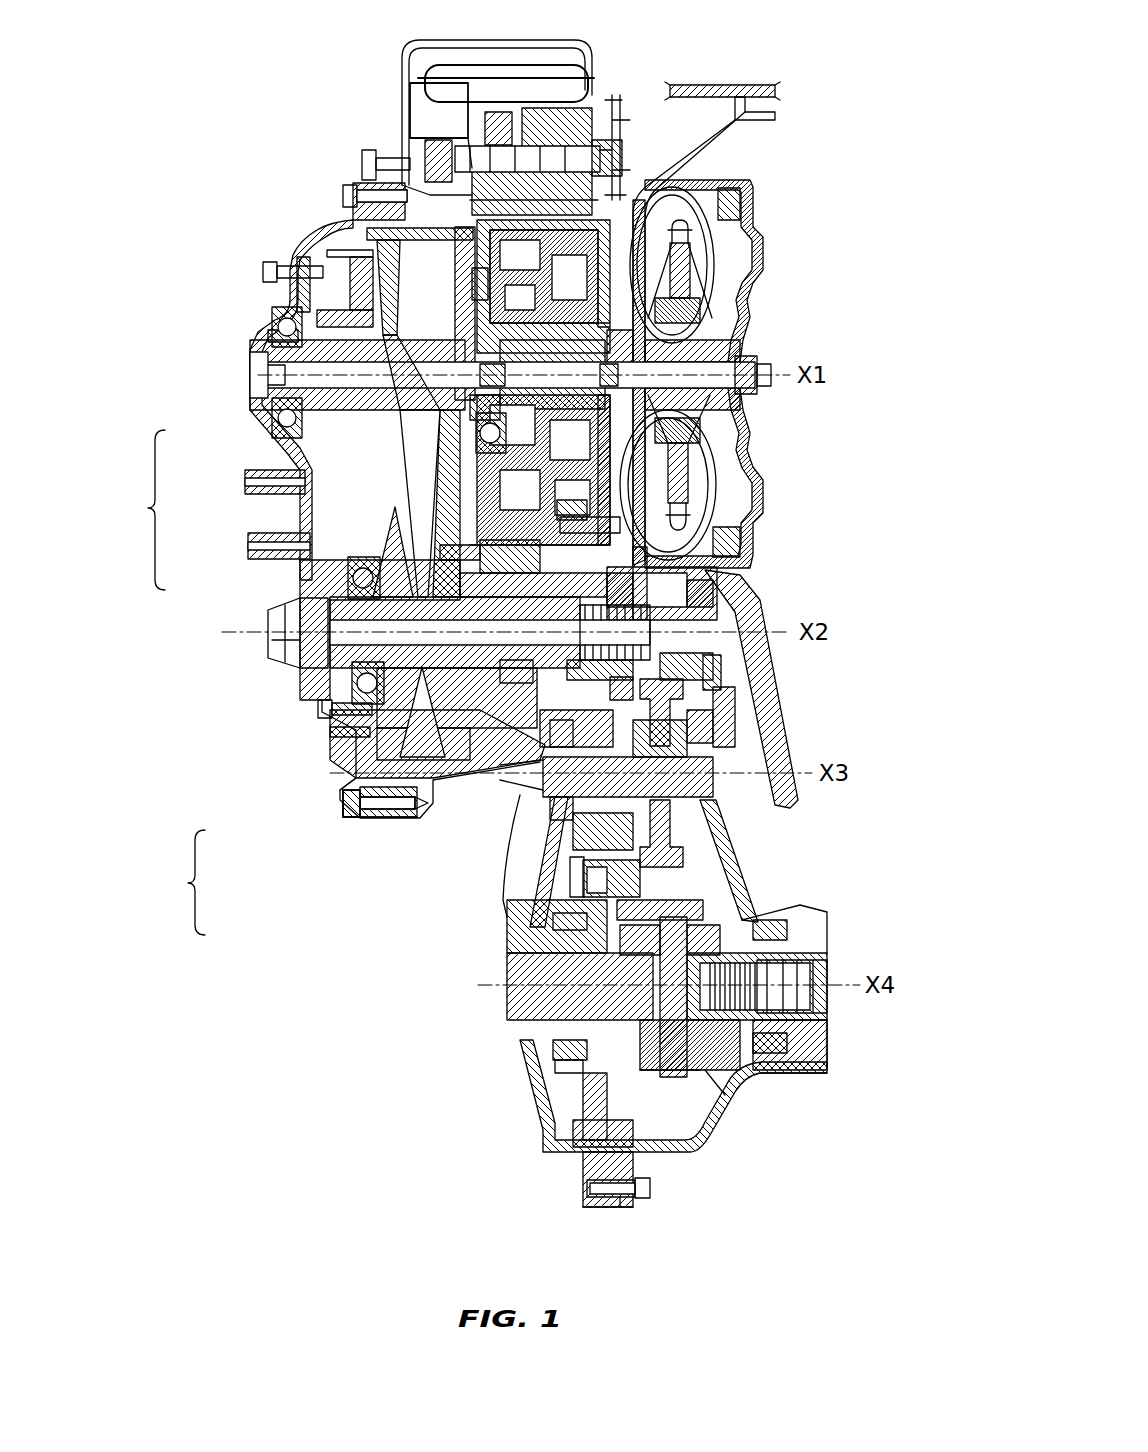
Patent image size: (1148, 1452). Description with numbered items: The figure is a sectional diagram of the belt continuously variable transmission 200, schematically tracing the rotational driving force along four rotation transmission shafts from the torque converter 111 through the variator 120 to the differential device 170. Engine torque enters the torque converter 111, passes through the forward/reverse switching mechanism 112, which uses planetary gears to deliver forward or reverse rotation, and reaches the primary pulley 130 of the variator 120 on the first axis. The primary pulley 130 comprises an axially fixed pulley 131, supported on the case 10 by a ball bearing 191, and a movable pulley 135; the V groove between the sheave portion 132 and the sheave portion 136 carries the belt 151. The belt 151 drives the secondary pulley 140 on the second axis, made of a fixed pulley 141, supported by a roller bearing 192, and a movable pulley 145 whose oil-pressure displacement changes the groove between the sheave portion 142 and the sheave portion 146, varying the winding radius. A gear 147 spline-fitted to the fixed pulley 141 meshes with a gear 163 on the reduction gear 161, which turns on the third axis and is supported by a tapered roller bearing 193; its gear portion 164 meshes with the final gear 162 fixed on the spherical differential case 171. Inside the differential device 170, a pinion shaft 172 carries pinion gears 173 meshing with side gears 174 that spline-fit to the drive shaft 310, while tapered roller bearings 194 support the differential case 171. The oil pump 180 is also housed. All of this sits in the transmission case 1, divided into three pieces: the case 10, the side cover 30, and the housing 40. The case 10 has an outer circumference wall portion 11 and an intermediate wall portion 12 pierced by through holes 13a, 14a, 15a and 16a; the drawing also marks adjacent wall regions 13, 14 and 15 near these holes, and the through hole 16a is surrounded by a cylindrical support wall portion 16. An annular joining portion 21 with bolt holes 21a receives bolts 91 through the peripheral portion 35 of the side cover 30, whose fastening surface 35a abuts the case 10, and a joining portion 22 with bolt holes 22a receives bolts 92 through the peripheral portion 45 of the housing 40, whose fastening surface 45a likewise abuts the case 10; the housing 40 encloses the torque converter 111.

The transmission case 1 is at (181, 882).
The case 10 is at (505, 915).
The outer circumference wall portion 11 is at (438, 792).
The intermediate wall portion 12 is at (462, 522).
The second bevel gear 13 is at (462, 446).
The through hole 13a is at (490, 430).
The counter shaft 14 is at (490, 640).
The through hole 14a is at (628, 758).
The output gear 15 is at (552, 842).
The through hole 15a is at (548, 812).
The cylindrical support wall portion 16 is at (583, 1100).
The through hole 16a is at (560, 1062).
The joining portion 21 is at (395, 818).
The bolt holes 21a is at (375, 156).
The joining portion 22 is at (583, 1180).
The bolt holes 22a is at (596, 1206).
The side cover 30 is at (340, 800).
The peripheral portion 35 is at (365, 820).
The fastening surface 35a is at (382, 820).
The housing 40 is at (692, 85).
The peripheral portion 45 is at (650, 1186).
The bolt shank 45a is at (624, 1206).
The bolt 91 is at (343, 190).
The bolt 92 is at (652, 1190).
The torque converter 111 is at (776, 207).
The forward/reverse switching mechanism 112 is at (622, 188).
The variator 120 is at (131, 510).
The primary pulley 130 is at (262, 430).
The fixed pulley 131 is at (252, 352).
The sheave portion 132 is at (458, 262).
The movable pulley 135 is at (262, 388).
The sheave portion 136 is at (350, 226).
The secondary pulley 140 is at (300, 570).
The fixed pulley 141 is at (270, 656).
The sheave portion 142 is at (318, 708).
The movable pulley 145 is at (270, 618).
The sheave portion 146 is at (335, 740).
The gear 147 is at (735, 668).
The belt 151 is at (245, 505).
The reduction gear 161 is at (785, 742).
The final gear 162 is at (545, 872).
The gear 163 is at (740, 705).
The gear portion 164 is at (522, 780).
The differential device 170 is at (775, 905).
The differential case 171 is at (760, 1076).
The pinion shaft 172 is at (670, 1072).
The pinion gears 173 is at (705, 1072).
The side gears 174 is at (688, 918).
The oil pump 180 is at (590, 62).
The ball bearing 191 is at (472, 292).
The roller bearing 192 is at (738, 600).
The tapered roller bearing 193 is at (603, 818).
The tapered roller bearing 194 is at (778, 920).
The belt continuously variable transmission 200 is at (333, 1044).
The drive shaft 310 is at (507, 965).